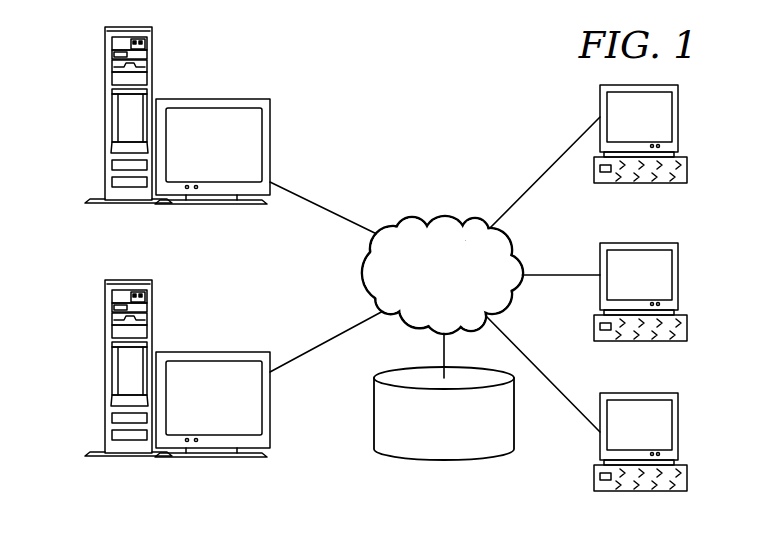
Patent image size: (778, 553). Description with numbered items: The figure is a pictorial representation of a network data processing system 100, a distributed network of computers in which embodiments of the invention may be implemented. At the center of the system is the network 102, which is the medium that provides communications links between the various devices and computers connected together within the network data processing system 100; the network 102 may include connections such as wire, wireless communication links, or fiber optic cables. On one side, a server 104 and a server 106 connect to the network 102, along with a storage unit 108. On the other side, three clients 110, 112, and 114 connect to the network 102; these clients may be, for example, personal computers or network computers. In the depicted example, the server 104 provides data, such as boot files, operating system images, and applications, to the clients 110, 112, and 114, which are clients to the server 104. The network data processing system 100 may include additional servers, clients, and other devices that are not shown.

The network data processing system 100 is at (336, 77).
The network 102 is at (412, 222).
The server 104 is at (105, 365).
The server 106 is at (105, 113).
The storage unit 108 is at (427, 460).
The client 110 is at (679, 117).
The client 112 is at (679, 274).
The client 114 is at (679, 430).